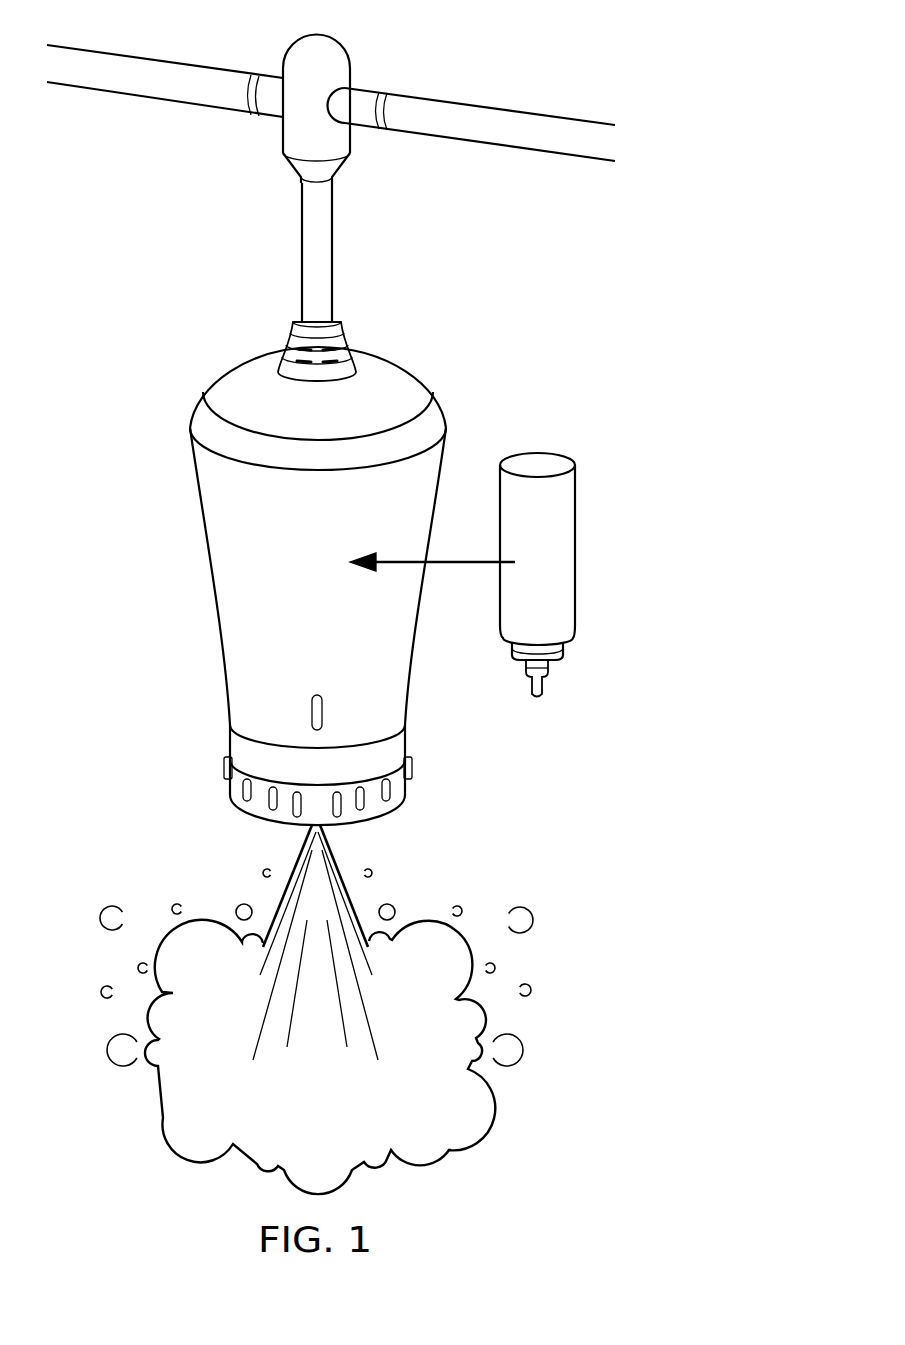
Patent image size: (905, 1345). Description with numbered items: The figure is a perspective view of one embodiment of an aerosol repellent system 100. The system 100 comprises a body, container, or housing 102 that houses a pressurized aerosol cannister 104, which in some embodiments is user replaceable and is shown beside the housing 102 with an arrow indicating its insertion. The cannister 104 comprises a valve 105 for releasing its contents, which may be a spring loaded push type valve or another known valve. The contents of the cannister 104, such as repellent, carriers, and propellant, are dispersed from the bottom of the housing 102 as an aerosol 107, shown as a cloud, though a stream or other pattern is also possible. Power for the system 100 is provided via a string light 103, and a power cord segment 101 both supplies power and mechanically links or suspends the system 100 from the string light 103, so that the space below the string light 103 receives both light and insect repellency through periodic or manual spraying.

The aerosol repellent system 100 is at (240, 358).
The power cord segment 101 is at (302, 250).
The housing 102 is at (230, 628).
The string light 103 is at (483, 105).
The pressurized aerosol cannister 104 is at (577, 550).
The valve 105 is at (550, 668).
The aerosol 107 is at (490, 1110).